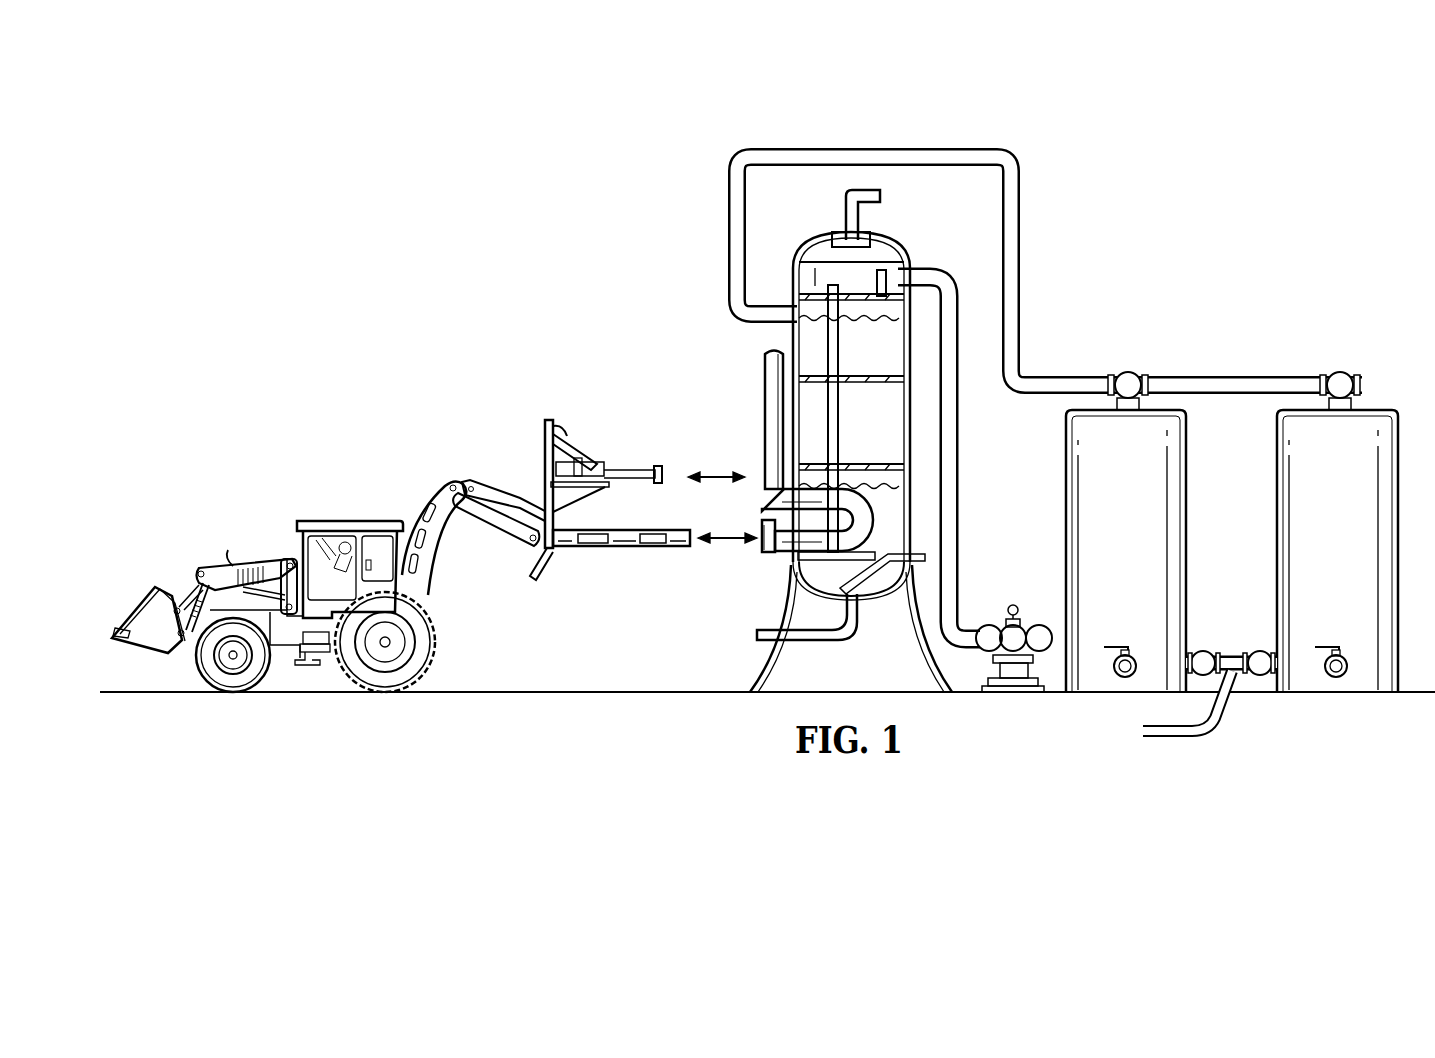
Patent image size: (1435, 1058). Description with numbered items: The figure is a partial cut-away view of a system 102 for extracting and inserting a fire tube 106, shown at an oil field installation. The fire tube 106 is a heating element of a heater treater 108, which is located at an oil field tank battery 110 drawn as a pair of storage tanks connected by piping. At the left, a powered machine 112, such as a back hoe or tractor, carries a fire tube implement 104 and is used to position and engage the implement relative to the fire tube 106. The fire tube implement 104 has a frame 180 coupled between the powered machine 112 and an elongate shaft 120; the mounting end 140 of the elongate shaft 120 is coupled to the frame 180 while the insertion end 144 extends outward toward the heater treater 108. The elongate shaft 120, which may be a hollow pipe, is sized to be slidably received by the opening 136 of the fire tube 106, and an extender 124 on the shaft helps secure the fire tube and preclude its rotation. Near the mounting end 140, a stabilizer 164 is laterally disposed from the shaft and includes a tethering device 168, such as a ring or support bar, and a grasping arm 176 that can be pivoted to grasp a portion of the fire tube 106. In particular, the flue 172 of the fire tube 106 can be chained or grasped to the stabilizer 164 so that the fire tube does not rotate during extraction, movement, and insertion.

The system 102 is at (418, 190).
The fire tube implement 104 is at (595, 505).
The fire tube 106 is at (779, 562).
The heater treater 108 is at (820, 236).
The oil field tank battery 110 is at (1257, 333).
The powered machine 112 is at (346, 520).
The elongate shaft 120 is at (621, 552).
The extender 124 is at (598, 533).
The opening 136 is at (760, 525).
The mounting end 140 is at (558, 565).
The insertion end 144 is at (685, 548).
The stabilizer 164 is at (590, 462).
The tethering device 168 is at (567, 432).
The flue 172 is at (762, 390).
The grasping arm 176 is at (637, 470).
The frame 180 is at (543, 450).